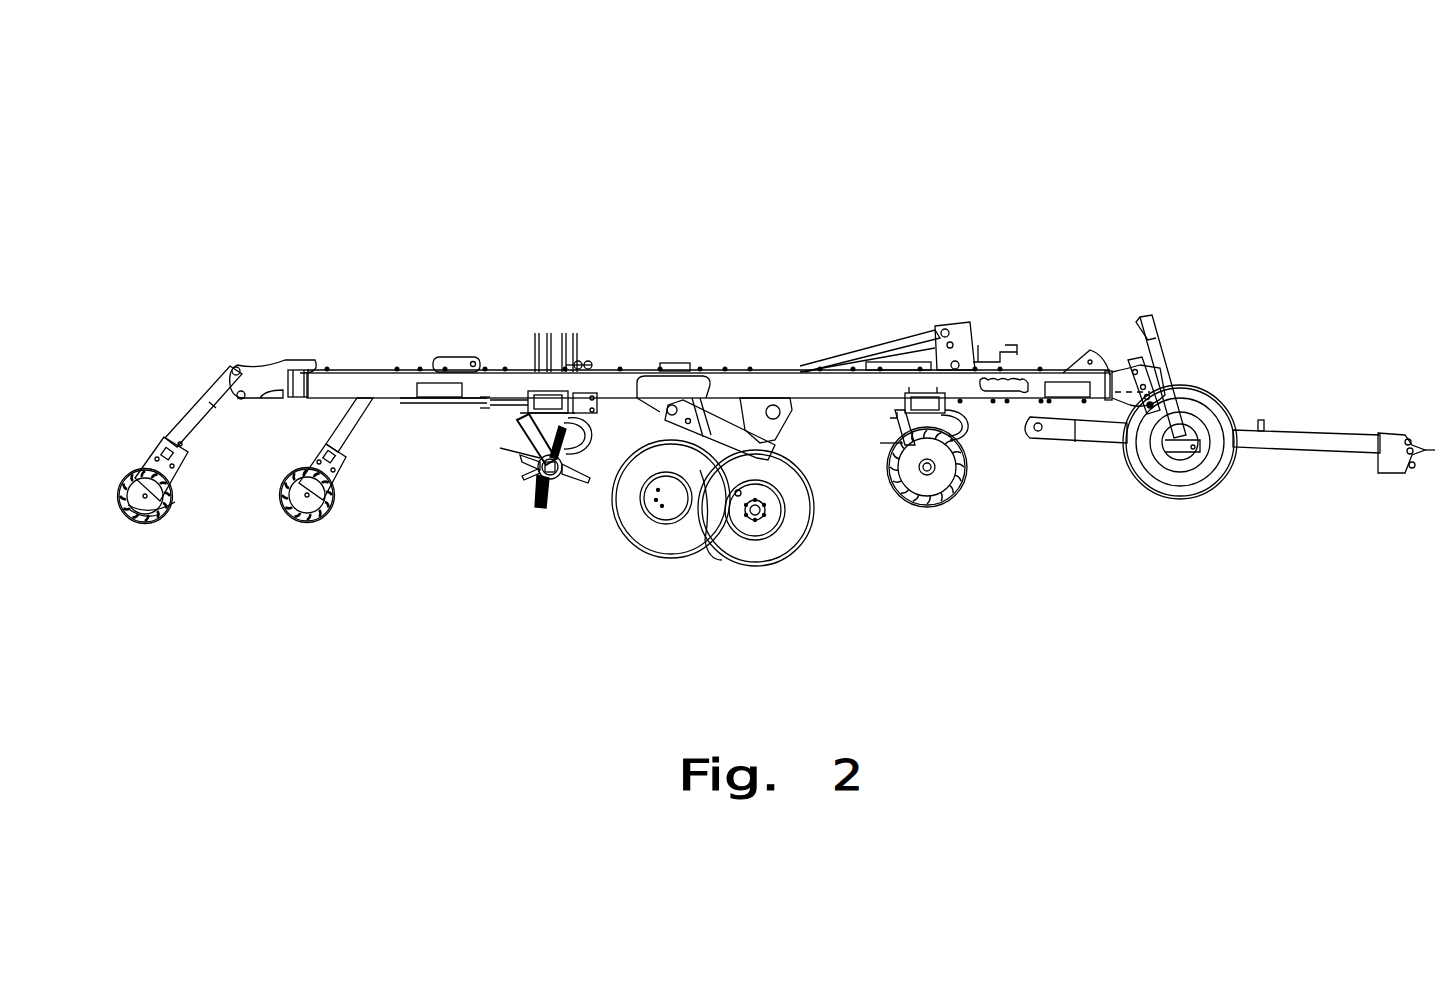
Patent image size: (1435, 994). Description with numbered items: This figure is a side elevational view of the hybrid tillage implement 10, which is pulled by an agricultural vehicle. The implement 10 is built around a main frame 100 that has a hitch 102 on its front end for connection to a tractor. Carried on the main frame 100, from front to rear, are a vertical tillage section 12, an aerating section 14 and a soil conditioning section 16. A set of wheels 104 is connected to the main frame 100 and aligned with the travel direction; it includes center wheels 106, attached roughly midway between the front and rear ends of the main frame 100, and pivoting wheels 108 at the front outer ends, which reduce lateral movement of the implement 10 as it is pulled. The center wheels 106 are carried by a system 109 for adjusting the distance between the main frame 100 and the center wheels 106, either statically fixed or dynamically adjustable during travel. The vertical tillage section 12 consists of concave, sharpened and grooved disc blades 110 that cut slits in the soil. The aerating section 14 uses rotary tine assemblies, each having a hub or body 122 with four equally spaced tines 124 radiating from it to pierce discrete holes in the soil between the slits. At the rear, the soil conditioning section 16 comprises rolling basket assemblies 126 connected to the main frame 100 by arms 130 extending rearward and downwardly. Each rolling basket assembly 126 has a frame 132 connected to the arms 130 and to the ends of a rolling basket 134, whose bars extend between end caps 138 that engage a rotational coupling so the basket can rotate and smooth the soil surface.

The tillage implement 10 is at (1034, 231).
The vertical tillage section 12 is at (954, 490).
The aerating section 14 is at (525, 509).
The soil conditioning section 16 is at (248, 492).
The main frame 100 is at (750, 383).
The hitch 102 is at (1402, 435).
The set of wheels 104 is at (872, 519).
The center wheels 106 is at (702, 569).
The pivoting wheels 108 is at (1187, 510).
The system for adjusting 109 is at (794, 434).
The disc blades 110 is at (947, 493).
The hub or body 122 is at (540, 469).
The tines 124 is at (565, 440).
The rolling basket assemblies 126 is at (128, 452).
The arms 130 is at (190, 410).
The frame 132 is at (160, 472).
The rolling basket 134 is at (148, 525).
The end caps 138 is at (170, 503).